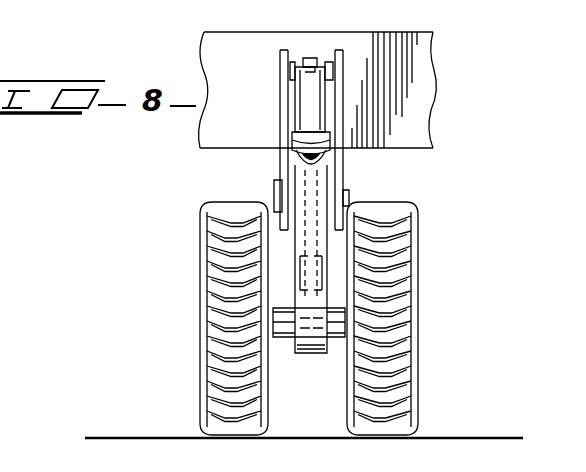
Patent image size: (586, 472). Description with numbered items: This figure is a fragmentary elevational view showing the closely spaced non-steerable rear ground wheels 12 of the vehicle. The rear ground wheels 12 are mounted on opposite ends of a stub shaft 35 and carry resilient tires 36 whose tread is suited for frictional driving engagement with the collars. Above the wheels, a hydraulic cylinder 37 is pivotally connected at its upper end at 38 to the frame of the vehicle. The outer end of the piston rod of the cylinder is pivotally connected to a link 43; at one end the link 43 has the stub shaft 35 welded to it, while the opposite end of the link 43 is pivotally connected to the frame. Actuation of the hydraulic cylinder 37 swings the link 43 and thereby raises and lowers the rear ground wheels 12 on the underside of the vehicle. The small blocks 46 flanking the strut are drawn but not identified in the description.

The rear ground wheels 12 is at (425, 303).
The stub shaft 35 is at (334, 340).
The resilient tires 36 is at (200, 316).
The hydraulic cylinder 37 is at (306, 113).
The upper end pivotal connection 38 is at (306, 58).
The link 43 is at (316, 353).
The pivot blocks 46 is at (280, 170).